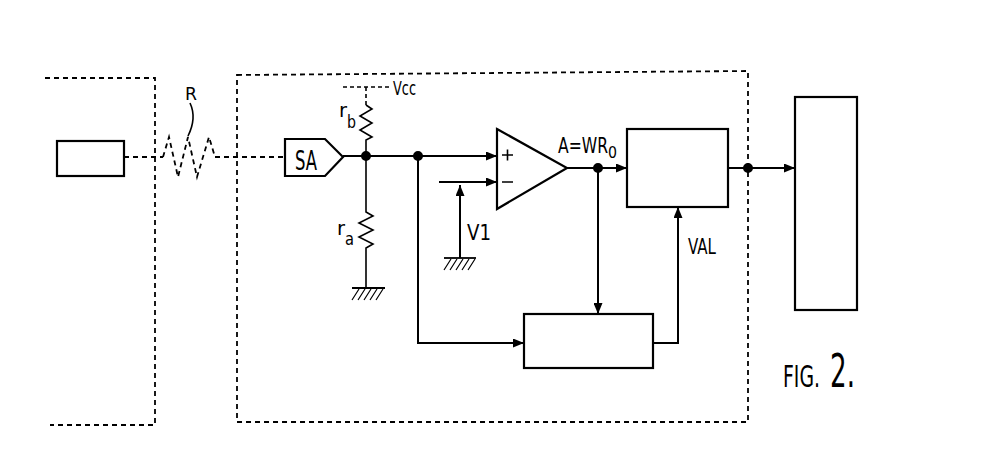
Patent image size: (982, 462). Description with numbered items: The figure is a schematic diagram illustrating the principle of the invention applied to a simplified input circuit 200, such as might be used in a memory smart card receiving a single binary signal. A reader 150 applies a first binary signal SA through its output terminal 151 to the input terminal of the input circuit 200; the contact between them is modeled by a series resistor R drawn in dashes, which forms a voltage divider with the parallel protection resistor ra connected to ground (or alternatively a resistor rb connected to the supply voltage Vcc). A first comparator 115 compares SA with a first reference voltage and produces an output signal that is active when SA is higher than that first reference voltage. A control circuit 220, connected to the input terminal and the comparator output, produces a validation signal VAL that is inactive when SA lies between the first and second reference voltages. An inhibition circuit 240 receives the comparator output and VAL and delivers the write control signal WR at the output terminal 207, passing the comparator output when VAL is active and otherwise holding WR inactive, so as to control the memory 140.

The reader 150 is at (83, 78).
The output terminal of the reader 151 is at (74, 141).
The input circuit 200 is at (251, 75).
The first comparator 115 is at (523, 142).
The inhibition circuit 240 is at (659, 207).
The control circuit 220 is at (575, 369).
The output terminal 207 is at (749, 169).
The memory 140 is at (822, 97).